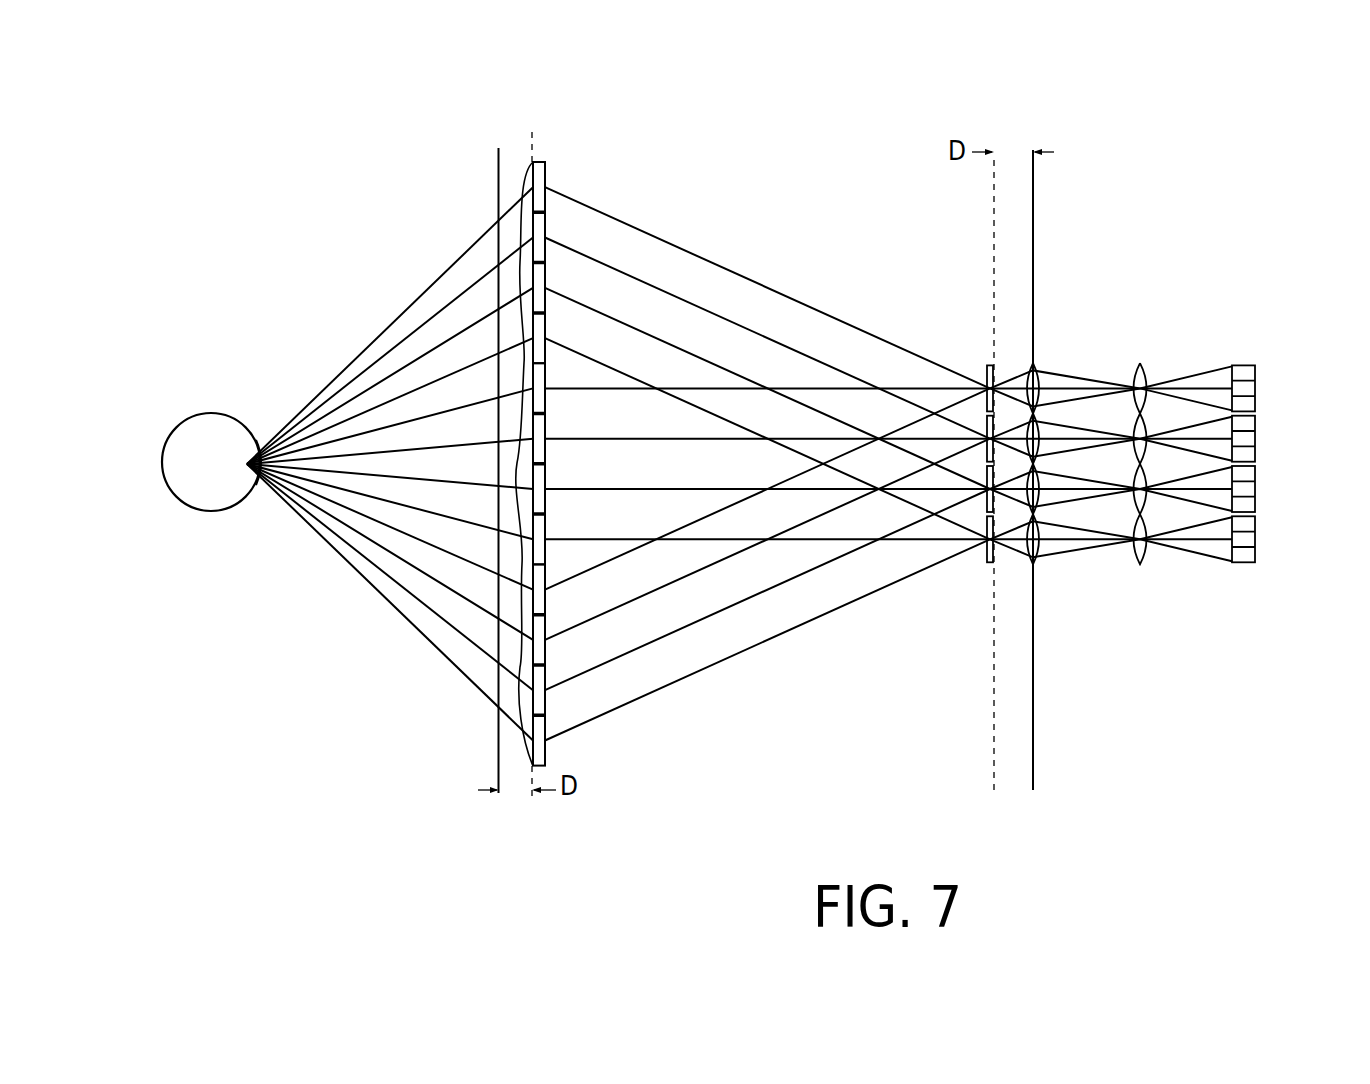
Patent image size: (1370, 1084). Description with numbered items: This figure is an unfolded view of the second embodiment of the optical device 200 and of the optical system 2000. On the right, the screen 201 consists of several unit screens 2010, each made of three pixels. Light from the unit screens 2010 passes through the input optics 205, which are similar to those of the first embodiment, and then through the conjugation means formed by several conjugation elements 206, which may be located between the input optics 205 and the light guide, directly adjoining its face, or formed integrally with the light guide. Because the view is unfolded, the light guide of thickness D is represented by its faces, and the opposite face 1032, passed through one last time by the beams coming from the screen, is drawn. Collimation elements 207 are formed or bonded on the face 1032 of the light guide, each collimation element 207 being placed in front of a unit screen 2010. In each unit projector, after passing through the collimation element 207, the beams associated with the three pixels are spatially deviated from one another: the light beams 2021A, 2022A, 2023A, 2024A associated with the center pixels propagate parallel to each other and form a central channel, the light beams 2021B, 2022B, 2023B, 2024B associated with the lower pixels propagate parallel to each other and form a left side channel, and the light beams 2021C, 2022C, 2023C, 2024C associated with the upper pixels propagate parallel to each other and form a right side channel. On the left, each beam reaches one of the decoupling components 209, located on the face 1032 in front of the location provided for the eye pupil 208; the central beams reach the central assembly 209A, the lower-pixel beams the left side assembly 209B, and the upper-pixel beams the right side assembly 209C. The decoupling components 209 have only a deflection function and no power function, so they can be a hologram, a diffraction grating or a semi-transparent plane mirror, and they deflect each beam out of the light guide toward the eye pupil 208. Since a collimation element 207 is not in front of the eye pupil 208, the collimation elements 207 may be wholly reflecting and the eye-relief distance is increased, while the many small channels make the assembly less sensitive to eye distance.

The eye pupil 208 is at (208, 422).
The decoupling components 209 is at (485, 422).
The central assembly of decoupling components 209A is at (512, 463).
The left side assembly of decoupling components 209B is at (520, 667).
The right side assembly of decoupling components 209C is at (512, 262).
The opposite face of the light guide 1032 is at (498, 160).
The light beam 2021A is at (590, 388).
The light beam 2022A is at (622, 439).
The light beam 2023A is at (673, 489).
The light beam 2024A is at (707, 539).
The light beam 2021B is at (710, 513).
The light beam 2022B is at (762, 542).
The light beam 2023B is at (825, 565).
The light beam 2024B is at (893, 585).
The light beam 2021C is at (580, 203).
The light beam 2022C is at (603, 263).
The light beam 2023C is at (627, 324).
The light beam 2024C is at (643, 381).
The collimation element 207 is at (987, 365).
The conjugation element 206 is at (1036, 364).
The input optics 205 is at (1139, 363).
The screen 201 is at (1252, 404).
The optical device 200 is at (1184, 381).
The unit screen 2010 is at (1262, 513).
The optical system 2000 is at (1127, 450).